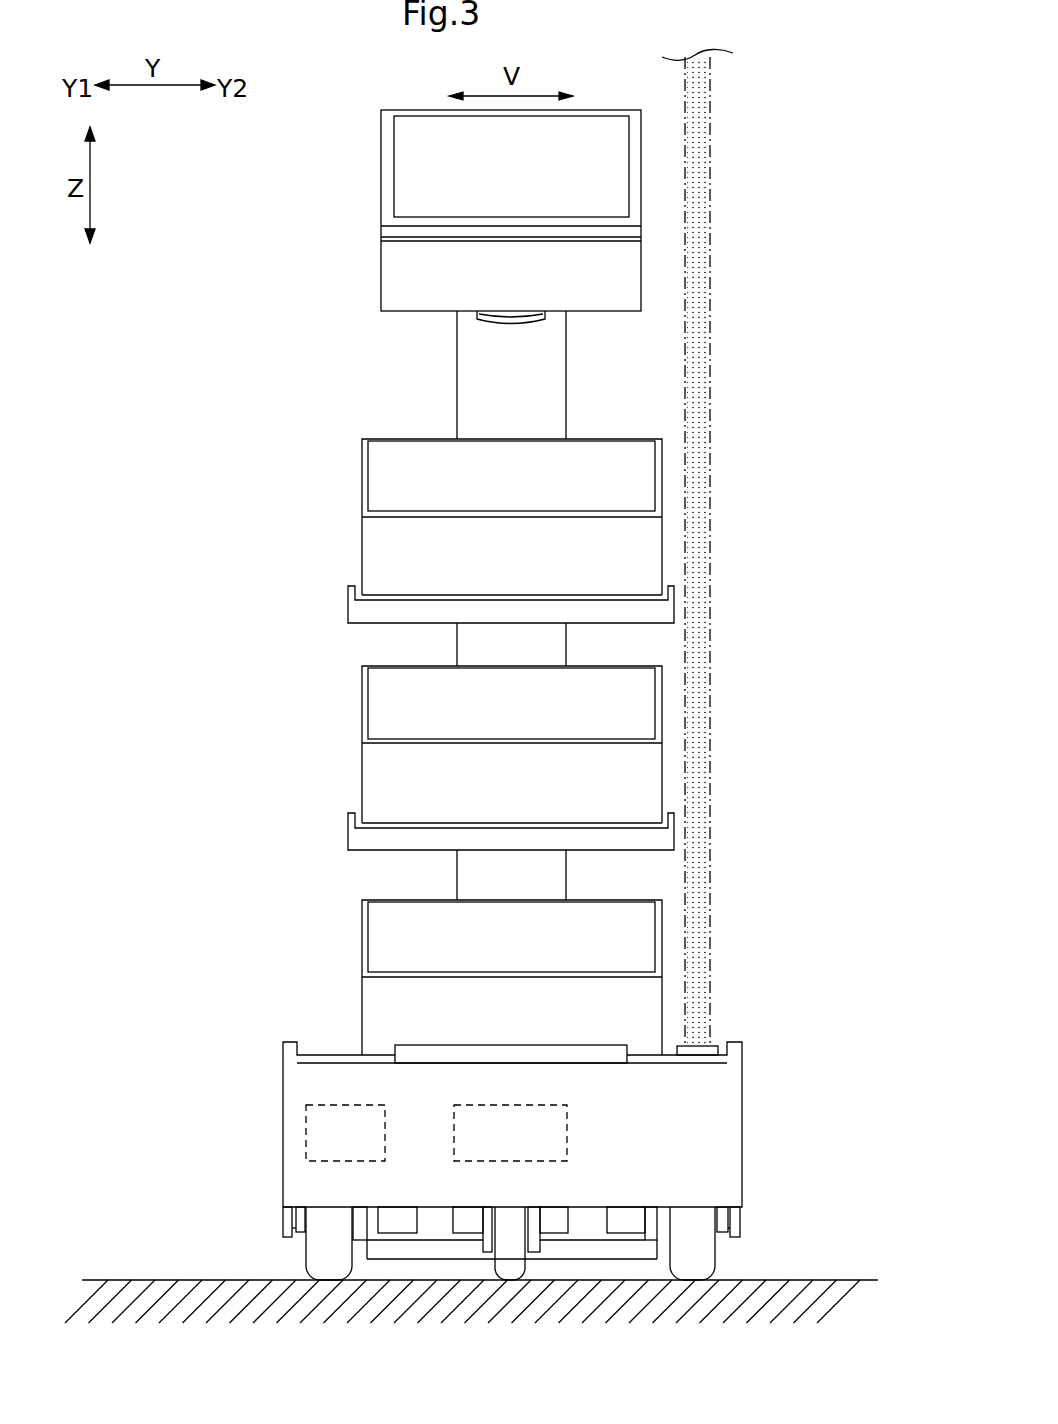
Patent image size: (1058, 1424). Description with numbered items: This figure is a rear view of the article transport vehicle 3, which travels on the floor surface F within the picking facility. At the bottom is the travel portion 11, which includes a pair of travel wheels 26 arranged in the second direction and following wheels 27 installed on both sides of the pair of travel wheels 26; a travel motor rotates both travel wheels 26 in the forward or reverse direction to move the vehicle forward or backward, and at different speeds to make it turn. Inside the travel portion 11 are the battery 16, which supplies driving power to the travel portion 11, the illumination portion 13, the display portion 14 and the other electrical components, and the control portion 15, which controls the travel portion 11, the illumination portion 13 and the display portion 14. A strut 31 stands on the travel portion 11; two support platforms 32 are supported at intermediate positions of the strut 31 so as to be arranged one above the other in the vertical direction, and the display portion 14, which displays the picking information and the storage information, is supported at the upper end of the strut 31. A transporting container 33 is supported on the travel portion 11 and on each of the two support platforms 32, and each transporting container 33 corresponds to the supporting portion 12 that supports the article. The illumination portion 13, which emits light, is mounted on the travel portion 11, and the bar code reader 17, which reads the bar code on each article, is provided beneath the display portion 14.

The article transport vehicle 3 is at (220, 493).
The travel portion 11 is at (728, 1183).
The supporting portion 12 is at (466, 711).
The illumination portion 13 is at (712, 1044).
The display portion 14 is at (381, 160).
The control portion 15 is at (568, 1137).
The battery 16 is at (305, 1135).
The bar code reader 17 is at (533, 326).
The travel wheels 26 is at (307, 1258).
The following wheels 27 is at (525, 1265).
The strut 31 is at (467, 387).
The support platforms 32 is at (348, 600).
The transporting container 33 is at (362, 995).
The floor surface F is at (185, 1280).